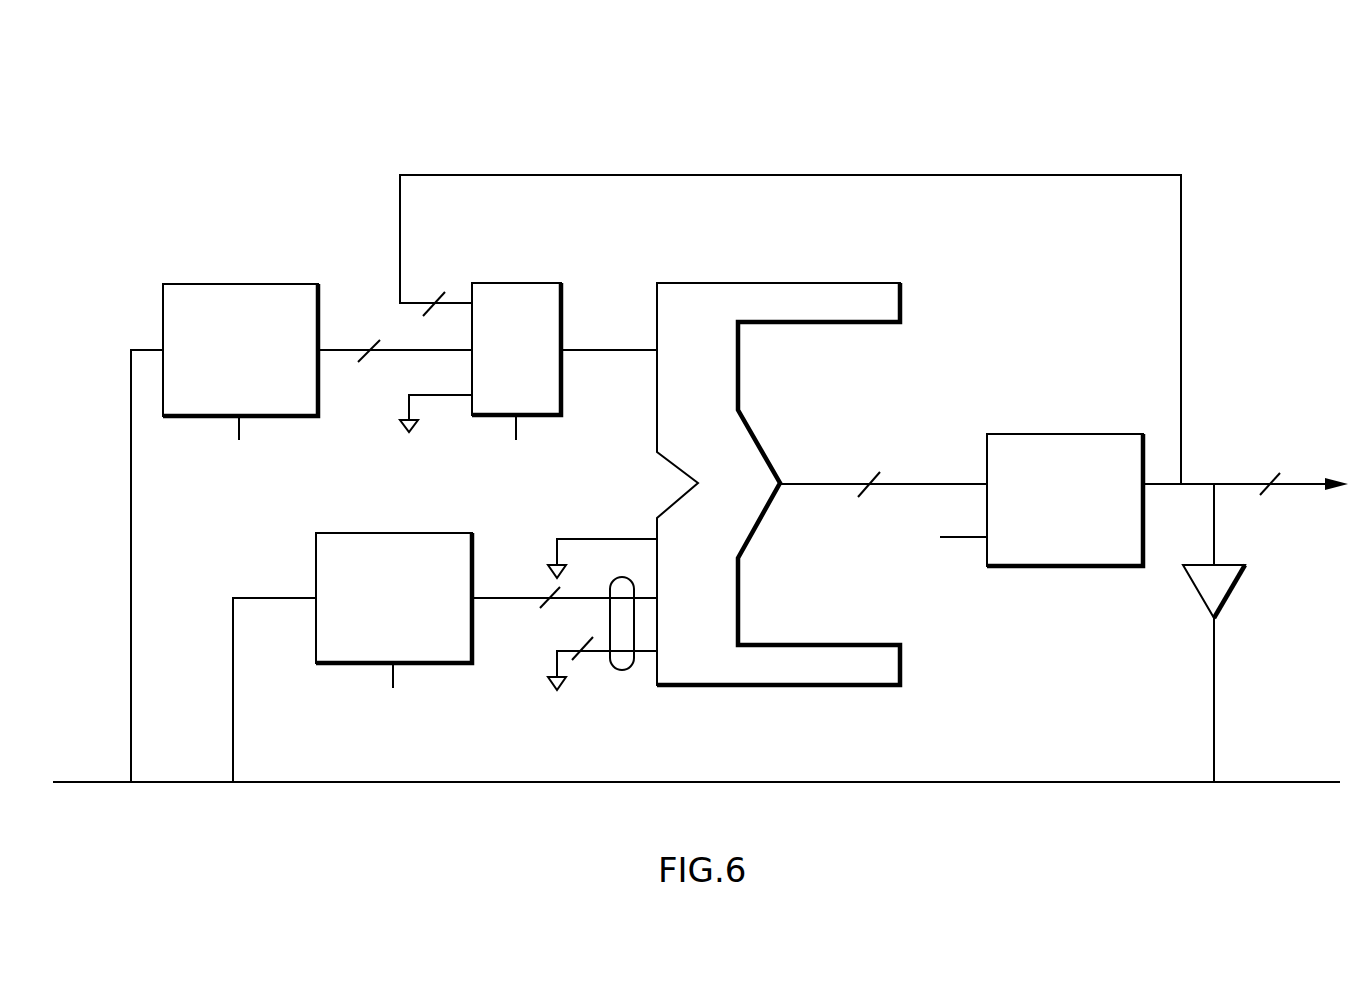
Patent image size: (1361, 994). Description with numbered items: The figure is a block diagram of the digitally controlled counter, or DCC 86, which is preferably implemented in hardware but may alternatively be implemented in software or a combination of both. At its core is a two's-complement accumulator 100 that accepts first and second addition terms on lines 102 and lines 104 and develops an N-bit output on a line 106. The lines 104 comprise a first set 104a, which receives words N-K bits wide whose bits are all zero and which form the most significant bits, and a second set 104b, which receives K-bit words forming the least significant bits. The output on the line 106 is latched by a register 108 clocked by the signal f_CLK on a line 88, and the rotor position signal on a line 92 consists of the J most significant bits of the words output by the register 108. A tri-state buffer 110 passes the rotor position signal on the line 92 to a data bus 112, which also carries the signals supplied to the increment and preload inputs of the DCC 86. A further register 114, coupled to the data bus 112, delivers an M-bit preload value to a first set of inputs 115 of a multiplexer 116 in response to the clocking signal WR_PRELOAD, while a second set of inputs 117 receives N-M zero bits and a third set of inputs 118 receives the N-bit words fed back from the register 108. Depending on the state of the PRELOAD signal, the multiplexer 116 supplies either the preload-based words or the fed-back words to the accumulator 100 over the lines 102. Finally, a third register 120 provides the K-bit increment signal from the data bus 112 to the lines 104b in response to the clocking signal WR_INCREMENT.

The digitally controlled counter (DCC) 86 is at (628, 82).
The line carrying clocking signal f_CLK 88 is at (968, 538).
The line carrying rotor position signal 92 is at (1312, 484).
The accumulator 100 is at (850, 283).
The lines carrying first addition term 102 is at (603, 350).
The lines carrying second addition term 104 is at (620, 670).
The first set of lines 104a is at (517, 598).
The second set of lines 104b is at (558, 662).
The output line of accumulator 106 is at (808, 484).
The register 108 is at (1003, 434).
The tri-state buffer 110 is at (1228, 562).
The data bus 112 is at (1033, 782).
The further register 114 is at (205, 284).
The first set of inputs of multiplexer 115 is at (395, 347).
The multiplexer 116 is at (513, 283).
The second set of inputs of multiplexer 117 is at (437, 397).
The third set of inputs of multiplexer 118 is at (658, 175).
The third register 120 is at (316, 562).